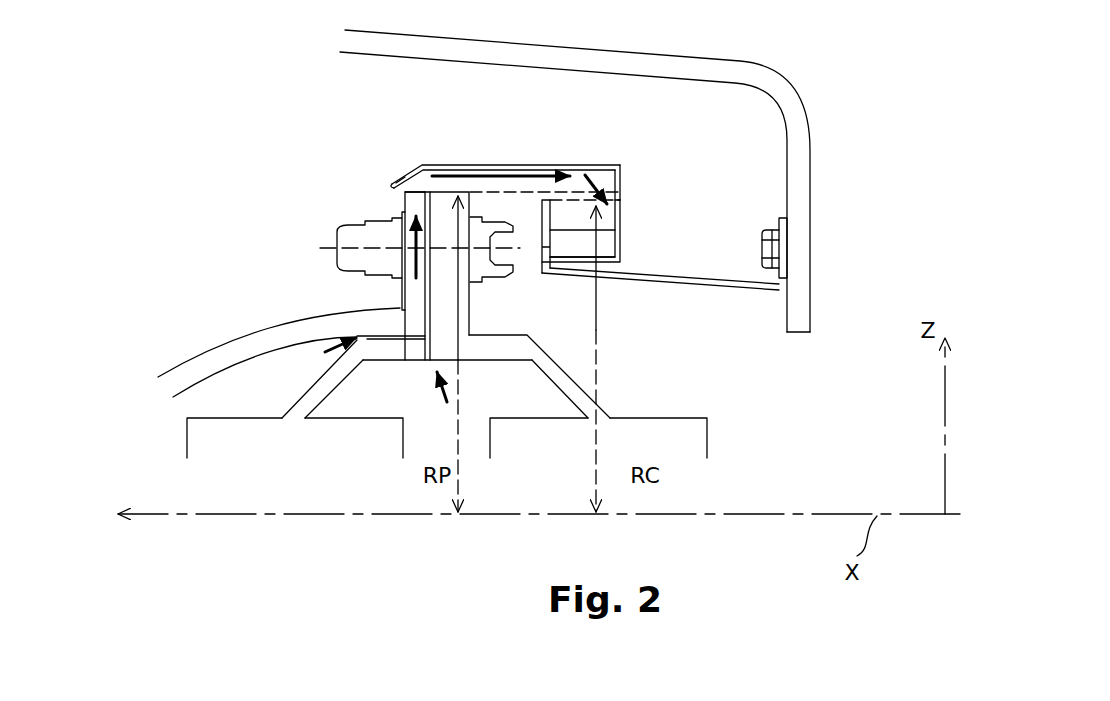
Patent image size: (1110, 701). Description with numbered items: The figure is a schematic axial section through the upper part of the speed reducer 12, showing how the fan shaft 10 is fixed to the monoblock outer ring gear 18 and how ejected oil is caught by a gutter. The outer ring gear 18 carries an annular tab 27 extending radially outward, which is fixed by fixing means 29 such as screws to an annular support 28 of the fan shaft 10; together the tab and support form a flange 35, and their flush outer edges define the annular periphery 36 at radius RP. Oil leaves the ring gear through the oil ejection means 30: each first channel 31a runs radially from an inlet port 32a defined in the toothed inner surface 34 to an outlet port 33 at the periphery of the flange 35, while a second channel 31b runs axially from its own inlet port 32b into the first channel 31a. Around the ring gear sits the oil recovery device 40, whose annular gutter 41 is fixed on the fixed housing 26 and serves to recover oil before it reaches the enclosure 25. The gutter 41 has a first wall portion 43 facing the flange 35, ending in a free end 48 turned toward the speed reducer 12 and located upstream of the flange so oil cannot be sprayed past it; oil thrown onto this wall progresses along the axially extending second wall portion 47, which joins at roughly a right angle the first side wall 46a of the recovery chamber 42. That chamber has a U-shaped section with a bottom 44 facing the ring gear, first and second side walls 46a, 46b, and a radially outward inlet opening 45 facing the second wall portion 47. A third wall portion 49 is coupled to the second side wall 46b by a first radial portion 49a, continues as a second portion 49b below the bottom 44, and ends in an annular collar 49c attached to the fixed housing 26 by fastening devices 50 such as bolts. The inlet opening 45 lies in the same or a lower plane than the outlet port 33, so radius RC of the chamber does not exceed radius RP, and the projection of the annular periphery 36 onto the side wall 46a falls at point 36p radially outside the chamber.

The fan shaft 10 is at (198, 358).
The speed reducer 12 is at (738, 450).
The outer ring gear 18 is at (567, 380).
The enclosure 25 is at (258, 385).
The fixed housing 26 is at (692, 62).
The annular tab 27 is at (447, 303).
The annular support 28 is at (412, 320).
The fixing means 29 is at (322, 238).
The oil ejection means 30 is at (418, 297).
The first channel 31a is at (427, 204).
The second channel 31b is at (390, 338).
The inlet port 32a is at (427, 363).
The inlet port 32b is at (325, 353).
The outlet port 33 is at (425, 190).
The inner surface 34 is at (508, 370).
The flange 35 is at (533, 288).
The annular periphery 36 is at (445, 183).
The point 36p is at (620, 193).
The oil recovery device 40 is at (600, 150).
The annular gutter 41 is at (520, 165).
The recovery chamber 42 is at (603, 242).
The first wall portion 43 is at (390, 183).
The bottom 44 is at (612, 261).
The inlet opening 45 is at (585, 173).
The first side wall 46a is at (617, 203).
The second side wall 46b is at (528, 192).
The second wall portion 47 is at (470, 165).
The free end 48 is at (388, 190).
The third wall portion 49 is at (695, 285).
The first radial portion 49a is at (552, 248).
The second portion 49b is at (745, 290).
The annular collar 49c is at (783, 270).
The fastening devices 50 is at (808, 245).